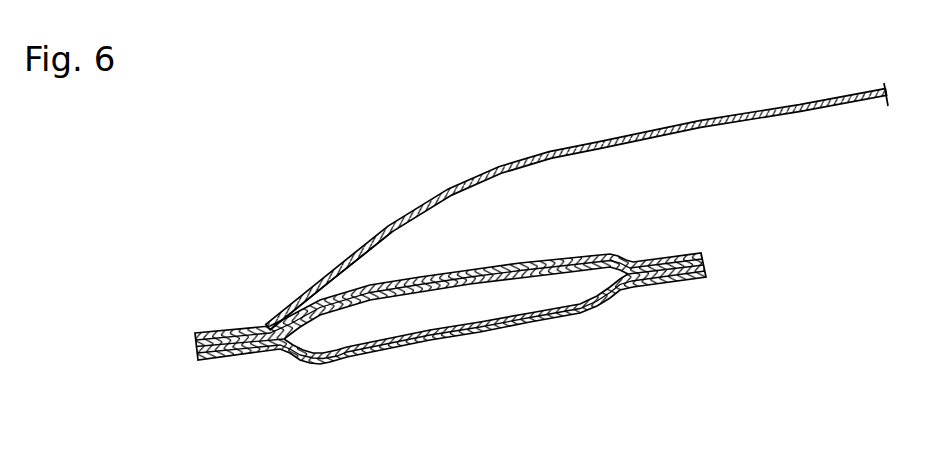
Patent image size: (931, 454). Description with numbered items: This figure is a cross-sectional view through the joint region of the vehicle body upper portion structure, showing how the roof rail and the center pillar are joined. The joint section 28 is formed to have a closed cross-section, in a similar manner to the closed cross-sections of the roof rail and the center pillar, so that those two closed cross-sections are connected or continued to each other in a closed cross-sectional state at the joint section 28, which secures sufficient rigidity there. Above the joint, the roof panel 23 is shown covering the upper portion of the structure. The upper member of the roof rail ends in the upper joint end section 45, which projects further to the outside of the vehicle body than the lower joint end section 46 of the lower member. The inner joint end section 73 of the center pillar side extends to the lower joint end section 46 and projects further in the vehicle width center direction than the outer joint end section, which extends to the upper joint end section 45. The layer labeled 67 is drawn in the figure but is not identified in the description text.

The roof panel 23 is at (695, 126).
The joint section 28 is at (402, 271).
The upper joint end section 45 is at (523, 262).
The lower joint end section 46 is at (488, 323).
The inner sublayer of upper layer 67 is at (428, 292).
The inner joint end section 73 is at (540, 321).